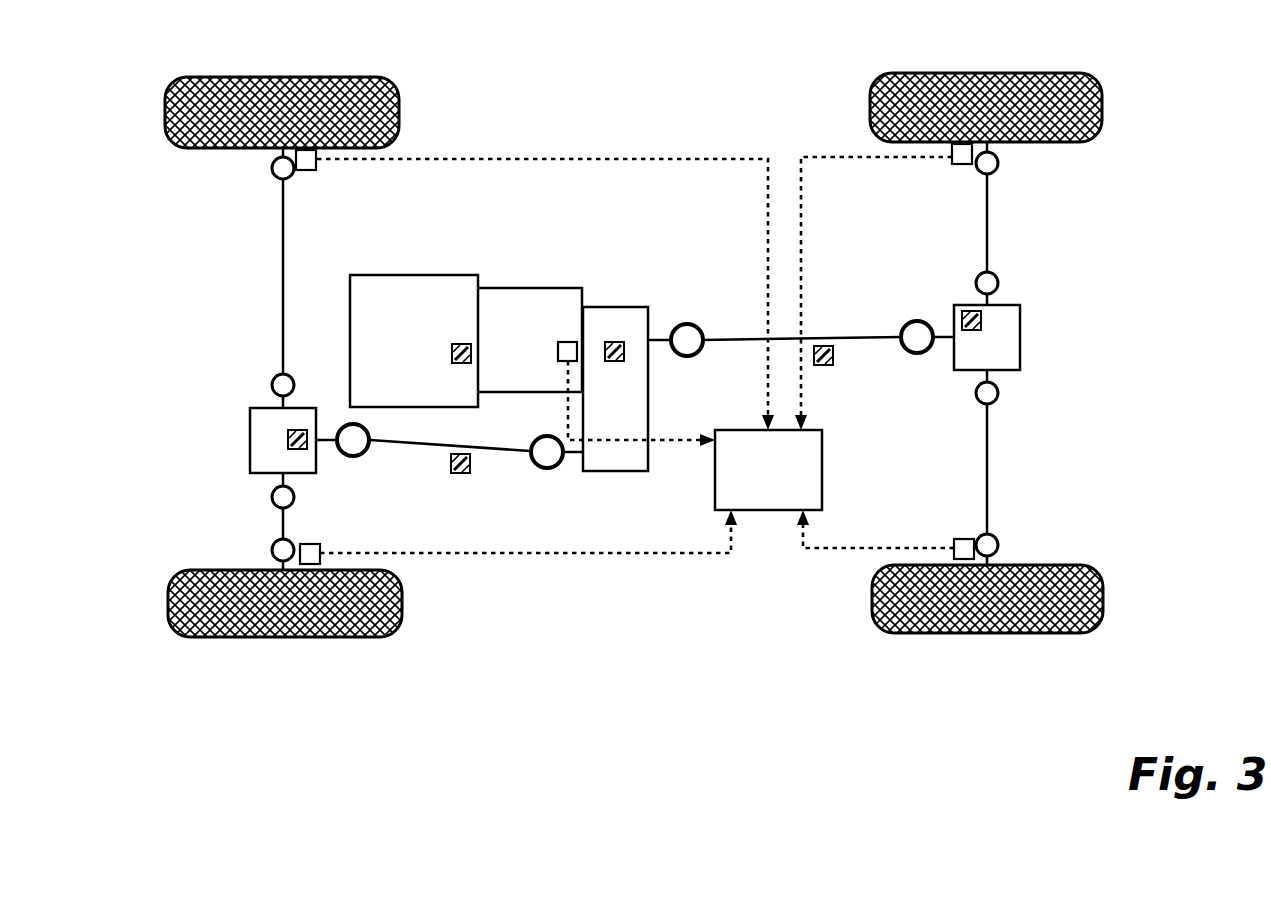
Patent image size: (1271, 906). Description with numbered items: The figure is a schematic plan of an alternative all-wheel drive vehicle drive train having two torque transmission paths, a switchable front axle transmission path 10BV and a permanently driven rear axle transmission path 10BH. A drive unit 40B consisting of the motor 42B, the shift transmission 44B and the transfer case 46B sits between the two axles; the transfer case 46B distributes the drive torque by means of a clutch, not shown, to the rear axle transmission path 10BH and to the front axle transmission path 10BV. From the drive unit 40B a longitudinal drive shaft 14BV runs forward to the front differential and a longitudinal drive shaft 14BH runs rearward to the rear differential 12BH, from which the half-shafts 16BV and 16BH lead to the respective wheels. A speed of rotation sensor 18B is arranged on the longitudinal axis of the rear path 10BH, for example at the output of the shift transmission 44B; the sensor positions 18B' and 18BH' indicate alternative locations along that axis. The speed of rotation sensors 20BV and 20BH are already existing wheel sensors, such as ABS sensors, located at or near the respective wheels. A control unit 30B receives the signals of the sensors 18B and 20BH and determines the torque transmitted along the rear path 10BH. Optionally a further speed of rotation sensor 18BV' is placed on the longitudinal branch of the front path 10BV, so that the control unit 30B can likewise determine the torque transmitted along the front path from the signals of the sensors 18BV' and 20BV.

The front axle transmission path 10BV is at (176, 371).
The rear axle transmission path 10BH is at (1052, 266).
The differential gear (rear) 12BH is at (1022, 353).
The drive shaft to front axle 14BV is at (428, 445).
The drive shaft to rear axle 14BH is at (730, 336).
The front axle half-shafts 16BV is at (283, 290).
The rear axle half-shafts 16BH is at (988, 212).
The speed of rotation sensor 18B is at (534, 389).
The speed of rotation sensor 18B' is at (556, 377).
The speed of rotation sensor 18BV' is at (355, 464).
The speed of rotation sensor 18BH' is at (897, 342).
The speed of rotation sensor 20BV is at (304, 172).
The speed of rotation sensor 20BH is at (950, 157).
The control unit 30B is at (787, 512).
The drive unit 40B is at (579, 232).
The motor VM 42B is at (405, 275).
The shift transmission 44B is at (500, 287).
The transfer case 46B is at (600, 307).